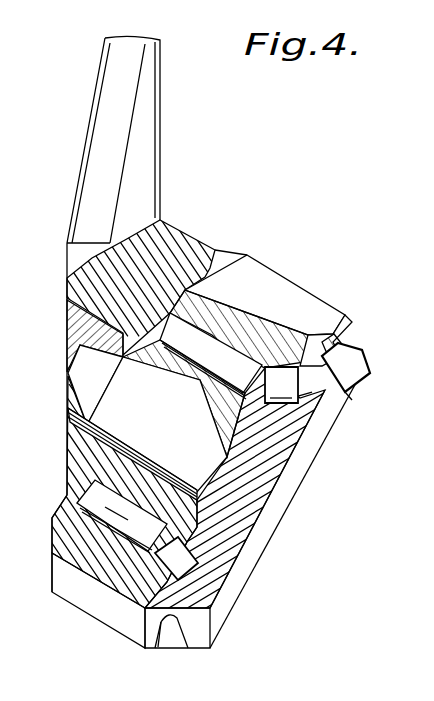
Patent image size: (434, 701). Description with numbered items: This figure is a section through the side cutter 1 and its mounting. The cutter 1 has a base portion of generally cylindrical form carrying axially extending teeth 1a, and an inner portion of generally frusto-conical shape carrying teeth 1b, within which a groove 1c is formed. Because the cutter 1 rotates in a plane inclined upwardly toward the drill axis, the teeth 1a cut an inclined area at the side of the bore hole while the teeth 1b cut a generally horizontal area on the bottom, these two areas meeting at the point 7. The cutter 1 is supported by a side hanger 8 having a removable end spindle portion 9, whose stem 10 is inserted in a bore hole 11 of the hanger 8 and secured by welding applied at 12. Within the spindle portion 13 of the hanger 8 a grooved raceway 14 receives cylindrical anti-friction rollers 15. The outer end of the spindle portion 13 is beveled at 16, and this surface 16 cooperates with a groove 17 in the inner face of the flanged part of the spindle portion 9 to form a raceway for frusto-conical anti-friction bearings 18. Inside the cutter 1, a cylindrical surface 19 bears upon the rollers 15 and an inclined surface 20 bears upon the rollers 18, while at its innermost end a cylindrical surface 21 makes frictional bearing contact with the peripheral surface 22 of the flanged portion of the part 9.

The side cutter 1 is at (208, 463).
The teeth 1a is at (78, 600).
The teeth 1b is at (195, 647).
The groove 1c is at (175, 633).
The point 7 is at (150, 647).
The side hanger 8 is at (168, 237).
The removable end spindle portion 9 is at (283, 453).
The stem 10 is at (141, 496).
The bore hole 11 is at (132, 368).
The welding 12 is at (75, 342).
The spindle portion 13 is at (158, 380).
The grooved raceway 14 is at (175, 388).
The cylindrical anti-friction rollers 15 is at (211, 356).
The beveled surface 16 is at (240, 405).
The groove 17 is at (282, 403).
The frusto-conical anti-friction bearings 18 is at (318, 336).
The cylindrical surface 19 is at (212, 335).
The inclined surface 20 is at (308, 330).
The cylindrical surface 21 is at (353, 350).
The peripheral surface 22 is at (297, 400).